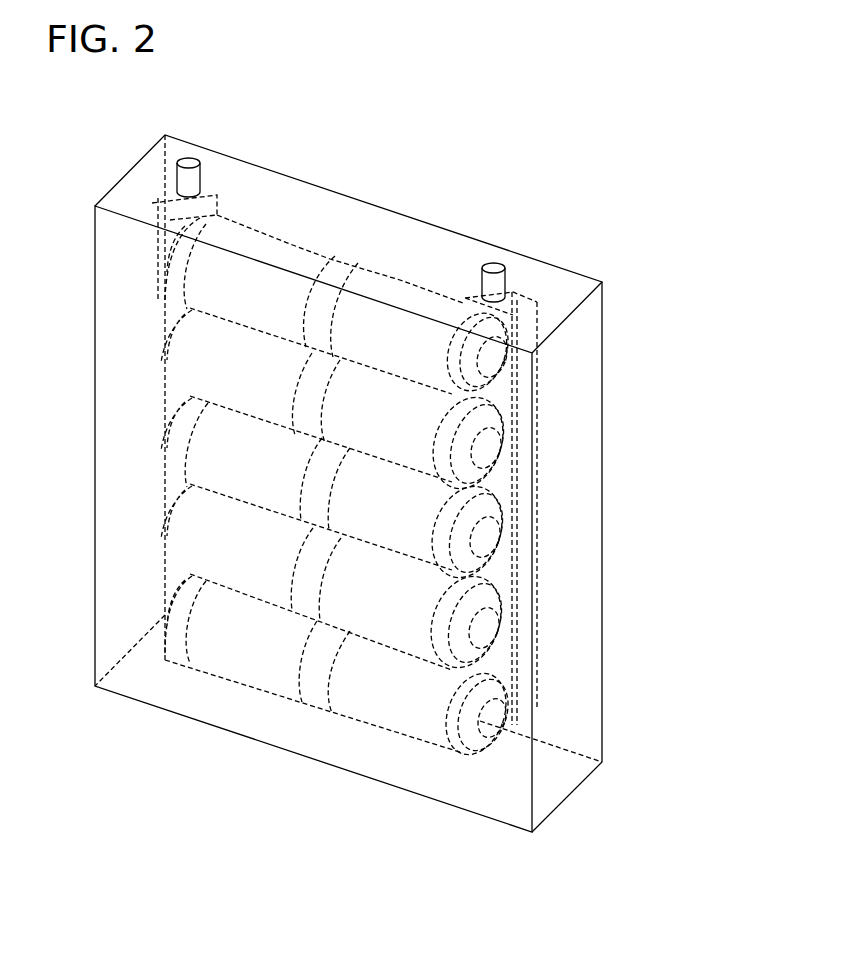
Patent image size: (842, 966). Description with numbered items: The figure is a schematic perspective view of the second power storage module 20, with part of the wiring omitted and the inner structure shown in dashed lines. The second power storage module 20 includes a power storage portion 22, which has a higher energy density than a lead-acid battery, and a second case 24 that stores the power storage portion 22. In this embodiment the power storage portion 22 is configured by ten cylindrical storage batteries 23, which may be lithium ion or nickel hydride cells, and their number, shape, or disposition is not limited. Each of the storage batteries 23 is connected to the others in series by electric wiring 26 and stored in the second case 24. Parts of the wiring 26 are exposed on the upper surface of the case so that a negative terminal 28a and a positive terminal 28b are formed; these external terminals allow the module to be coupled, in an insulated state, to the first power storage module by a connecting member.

The second power storage module 20 is at (364, 944).
The power storage portion 22 is at (412, 708).
The cylindrical storage battery 23 is at (263, 660).
The second case 24 is at (582, 787).
The electric wiring 26 is at (160, 248).
The negative terminal 28a is at (202, 177).
The positive terminal 28b is at (508, 278).